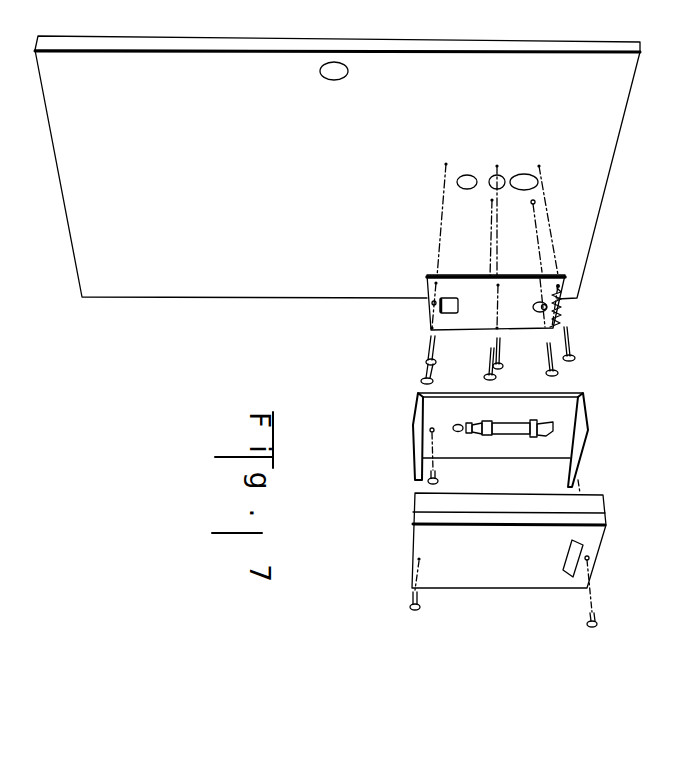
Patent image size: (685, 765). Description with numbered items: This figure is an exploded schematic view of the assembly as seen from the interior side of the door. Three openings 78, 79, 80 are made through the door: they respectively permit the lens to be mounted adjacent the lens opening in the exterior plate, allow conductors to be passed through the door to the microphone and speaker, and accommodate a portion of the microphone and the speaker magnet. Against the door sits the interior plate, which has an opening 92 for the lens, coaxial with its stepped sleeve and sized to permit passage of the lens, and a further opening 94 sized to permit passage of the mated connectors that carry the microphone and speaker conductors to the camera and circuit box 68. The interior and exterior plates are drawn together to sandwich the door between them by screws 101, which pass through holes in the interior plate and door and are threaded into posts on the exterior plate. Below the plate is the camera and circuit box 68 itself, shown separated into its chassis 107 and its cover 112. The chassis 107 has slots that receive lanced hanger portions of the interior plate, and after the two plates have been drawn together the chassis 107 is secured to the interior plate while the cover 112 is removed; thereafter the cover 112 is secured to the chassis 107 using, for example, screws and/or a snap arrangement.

The opening 78 is at (467, 175).
The opening 79 is at (495, 176).
The opening 80 is at (522, 175).
The opening 94 is at (427, 302).
The screws 101 is at (428, 352).
The opening 92 is at (558, 303).
The chassis 107 is at (442, 407).
The camera and circuit box 68 is at (506, 510).
The camera and circuit box cover 112 is at (593, 538).